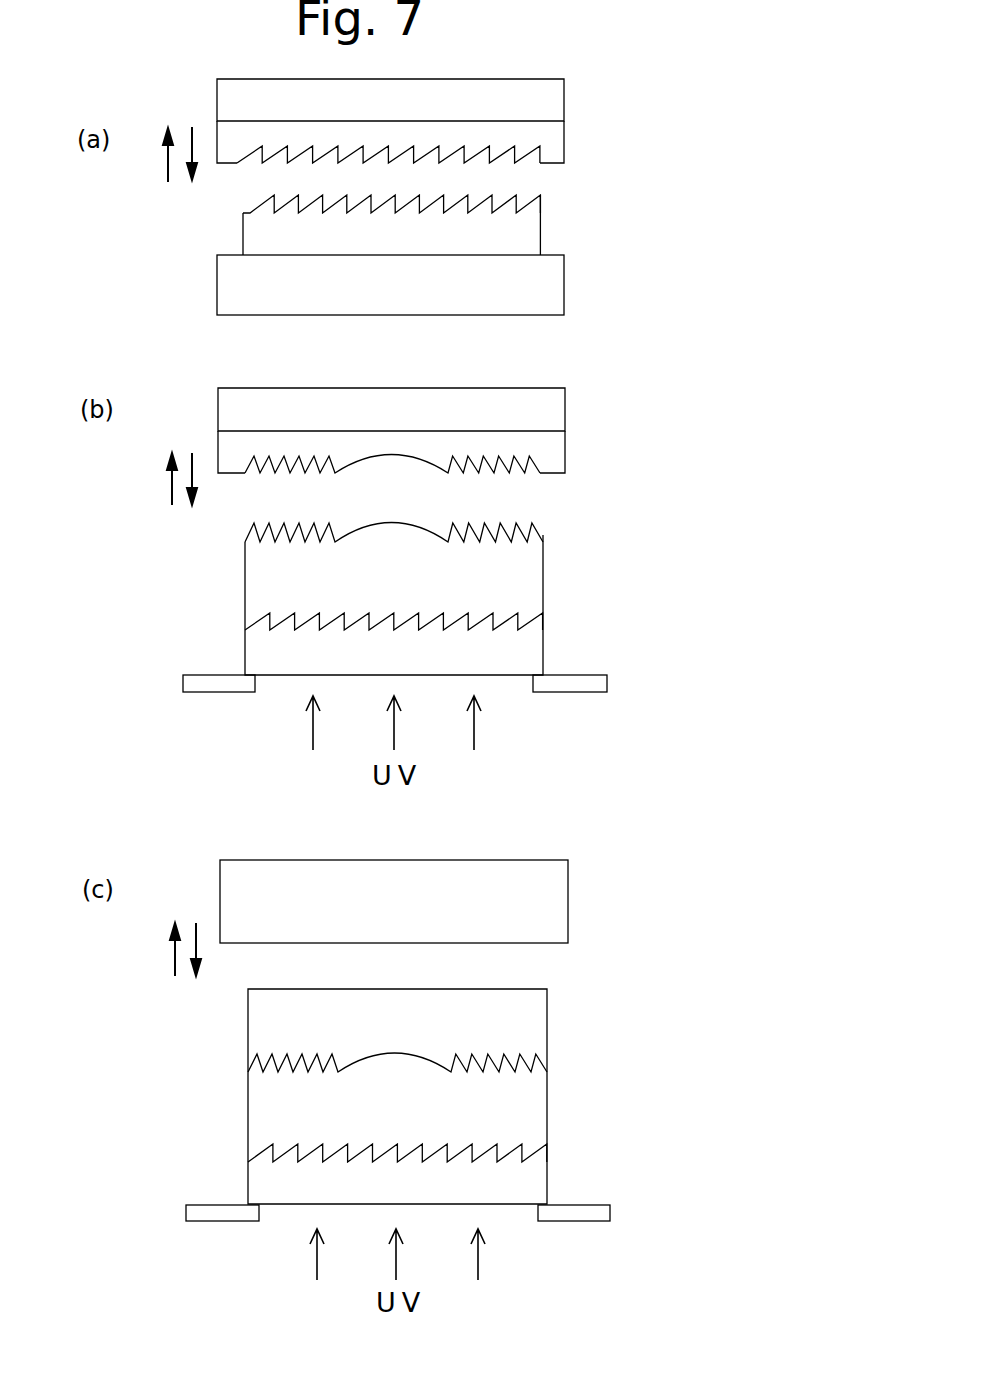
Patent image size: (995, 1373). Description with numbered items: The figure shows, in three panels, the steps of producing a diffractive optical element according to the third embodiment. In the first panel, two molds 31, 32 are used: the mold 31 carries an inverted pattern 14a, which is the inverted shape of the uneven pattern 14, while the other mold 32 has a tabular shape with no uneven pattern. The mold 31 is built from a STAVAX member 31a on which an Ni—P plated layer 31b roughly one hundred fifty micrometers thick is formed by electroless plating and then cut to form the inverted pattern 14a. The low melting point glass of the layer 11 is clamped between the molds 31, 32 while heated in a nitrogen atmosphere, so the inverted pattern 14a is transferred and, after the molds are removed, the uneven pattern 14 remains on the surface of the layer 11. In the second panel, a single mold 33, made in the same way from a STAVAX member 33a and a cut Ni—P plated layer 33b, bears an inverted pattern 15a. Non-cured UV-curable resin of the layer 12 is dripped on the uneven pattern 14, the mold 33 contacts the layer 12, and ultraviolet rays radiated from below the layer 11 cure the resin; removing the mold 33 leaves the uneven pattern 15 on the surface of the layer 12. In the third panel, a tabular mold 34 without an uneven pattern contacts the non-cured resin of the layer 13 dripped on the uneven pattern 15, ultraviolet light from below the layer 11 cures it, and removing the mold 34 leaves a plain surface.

The mold 31 is at (469, 145).
The STAVAX member 31a is at (552, 98).
The Ni—P plated layer 31b is at (429, 166).
The inverted pattern 14a is at (533, 168).
The uneven pattern 14 is at (298, 188).
The layer 11 is at (520, 232).
The mold 32 is at (550, 287).
The mold 33 is at (469, 458).
The STAVAX member 33a is at (548, 409).
The Ni—P plated layer 33b is at (430, 480).
The inverted pattern 15a is at (520, 488).
The uneven pattern 15 is at (298, 512).
The layer 12 is at (530, 575).
The layer 13 is at (529, 1027).
The mold 34 is at (558, 898).